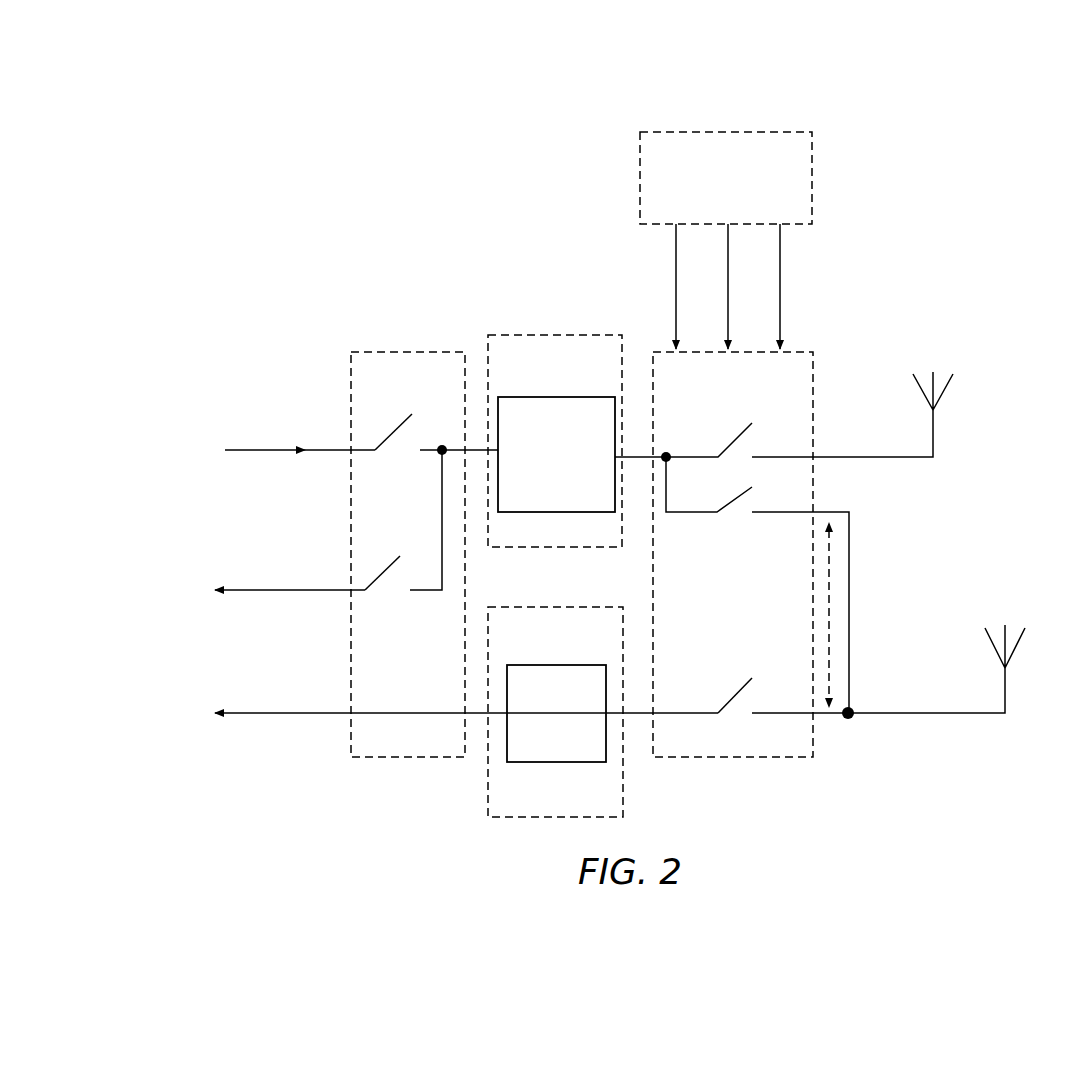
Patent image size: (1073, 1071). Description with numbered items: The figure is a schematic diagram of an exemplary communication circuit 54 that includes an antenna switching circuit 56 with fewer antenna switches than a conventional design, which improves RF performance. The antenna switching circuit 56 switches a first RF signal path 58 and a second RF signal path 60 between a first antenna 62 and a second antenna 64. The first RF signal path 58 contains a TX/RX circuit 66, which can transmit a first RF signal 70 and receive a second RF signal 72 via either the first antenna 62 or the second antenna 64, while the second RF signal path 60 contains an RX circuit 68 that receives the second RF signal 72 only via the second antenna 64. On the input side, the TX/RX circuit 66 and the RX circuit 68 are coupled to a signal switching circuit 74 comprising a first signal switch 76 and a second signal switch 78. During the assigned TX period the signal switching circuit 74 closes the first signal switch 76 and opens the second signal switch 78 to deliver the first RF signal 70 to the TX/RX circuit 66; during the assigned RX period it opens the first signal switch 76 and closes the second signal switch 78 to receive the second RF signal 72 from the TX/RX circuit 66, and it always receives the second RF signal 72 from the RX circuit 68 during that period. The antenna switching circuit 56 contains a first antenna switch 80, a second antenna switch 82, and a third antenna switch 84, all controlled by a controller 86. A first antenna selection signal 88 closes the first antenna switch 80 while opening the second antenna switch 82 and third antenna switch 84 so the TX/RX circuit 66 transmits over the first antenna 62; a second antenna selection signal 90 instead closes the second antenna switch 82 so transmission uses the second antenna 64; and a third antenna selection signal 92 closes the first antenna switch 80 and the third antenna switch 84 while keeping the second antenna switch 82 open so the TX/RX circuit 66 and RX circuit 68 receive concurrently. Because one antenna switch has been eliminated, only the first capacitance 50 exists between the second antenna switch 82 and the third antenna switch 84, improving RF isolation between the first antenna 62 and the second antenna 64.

The first capacitance 50 is at (830, 655).
The communication circuit 54 is at (937, 136).
The antenna switching circuit 56 is at (813, 382).
The first RF signal path 58 is at (508, 335).
The second RF signal path 60 is at (488, 797).
The first antenna 62 is at (945, 392).
The second antenna 64 is at (1017, 647).
The TX/RX circuit 66 is at (540, 397).
The RX circuit 68 is at (524, 665).
The first RF signal 70 is at (270, 447).
The second RF signal 72 is at (270, 587).
The signal switching circuit 74 is at (372, 352).
The first signal switch 76 is at (390, 456).
The second signal switch 78 is at (385, 597).
The first antenna switch 80 is at (725, 440).
The second antenna switch 82 is at (738, 520).
The third antenna switch 84 is at (740, 722).
The controller 86 is at (711, 132).
The first antenna selection signal 88 is at (676, 273).
The second antenna selection signal 90 is at (728, 295).
The third antenna selection signal 92 is at (782, 264).